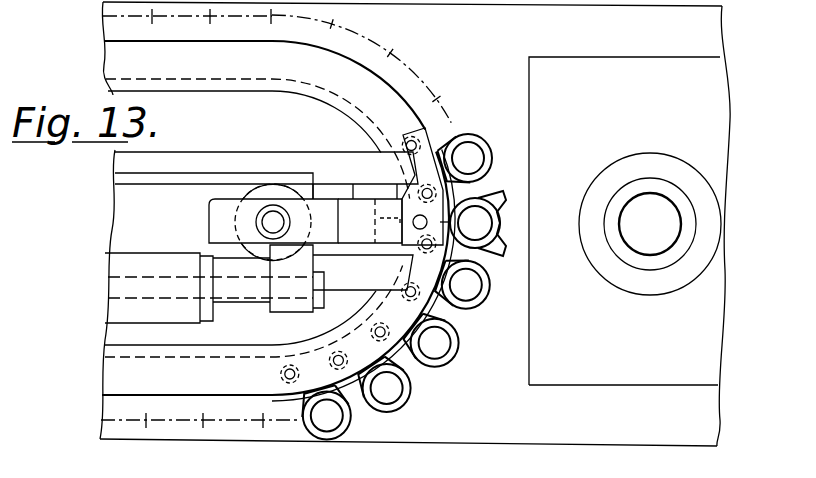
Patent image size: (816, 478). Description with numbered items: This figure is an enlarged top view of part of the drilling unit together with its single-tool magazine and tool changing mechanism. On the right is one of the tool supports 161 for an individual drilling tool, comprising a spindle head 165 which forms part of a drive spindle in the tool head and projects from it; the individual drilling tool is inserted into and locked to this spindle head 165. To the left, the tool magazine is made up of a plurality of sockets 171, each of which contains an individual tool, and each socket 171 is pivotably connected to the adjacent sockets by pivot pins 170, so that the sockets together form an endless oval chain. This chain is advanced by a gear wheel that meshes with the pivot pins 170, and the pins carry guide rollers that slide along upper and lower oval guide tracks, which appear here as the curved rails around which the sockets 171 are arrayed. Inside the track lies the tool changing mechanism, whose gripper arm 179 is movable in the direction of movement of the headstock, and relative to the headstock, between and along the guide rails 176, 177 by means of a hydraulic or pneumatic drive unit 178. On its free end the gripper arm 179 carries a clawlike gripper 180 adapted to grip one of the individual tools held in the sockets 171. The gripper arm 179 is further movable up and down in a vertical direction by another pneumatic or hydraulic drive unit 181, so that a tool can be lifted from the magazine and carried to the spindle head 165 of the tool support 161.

The tool support 161 is at (628, 283).
The spindle head 165 is at (625, 222).
The pivot pin 170 is at (343, 383).
The socket 171 is at (446, 361).
The guide rail 176 is at (305, 158).
The guide rail 177 is at (345, 286).
The drive unit 178 is at (137, 318).
The gripper arm 179 is at (352, 214).
The clawlike gripper 180 is at (487, 190).
The drive unit 181 is at (228, 246).